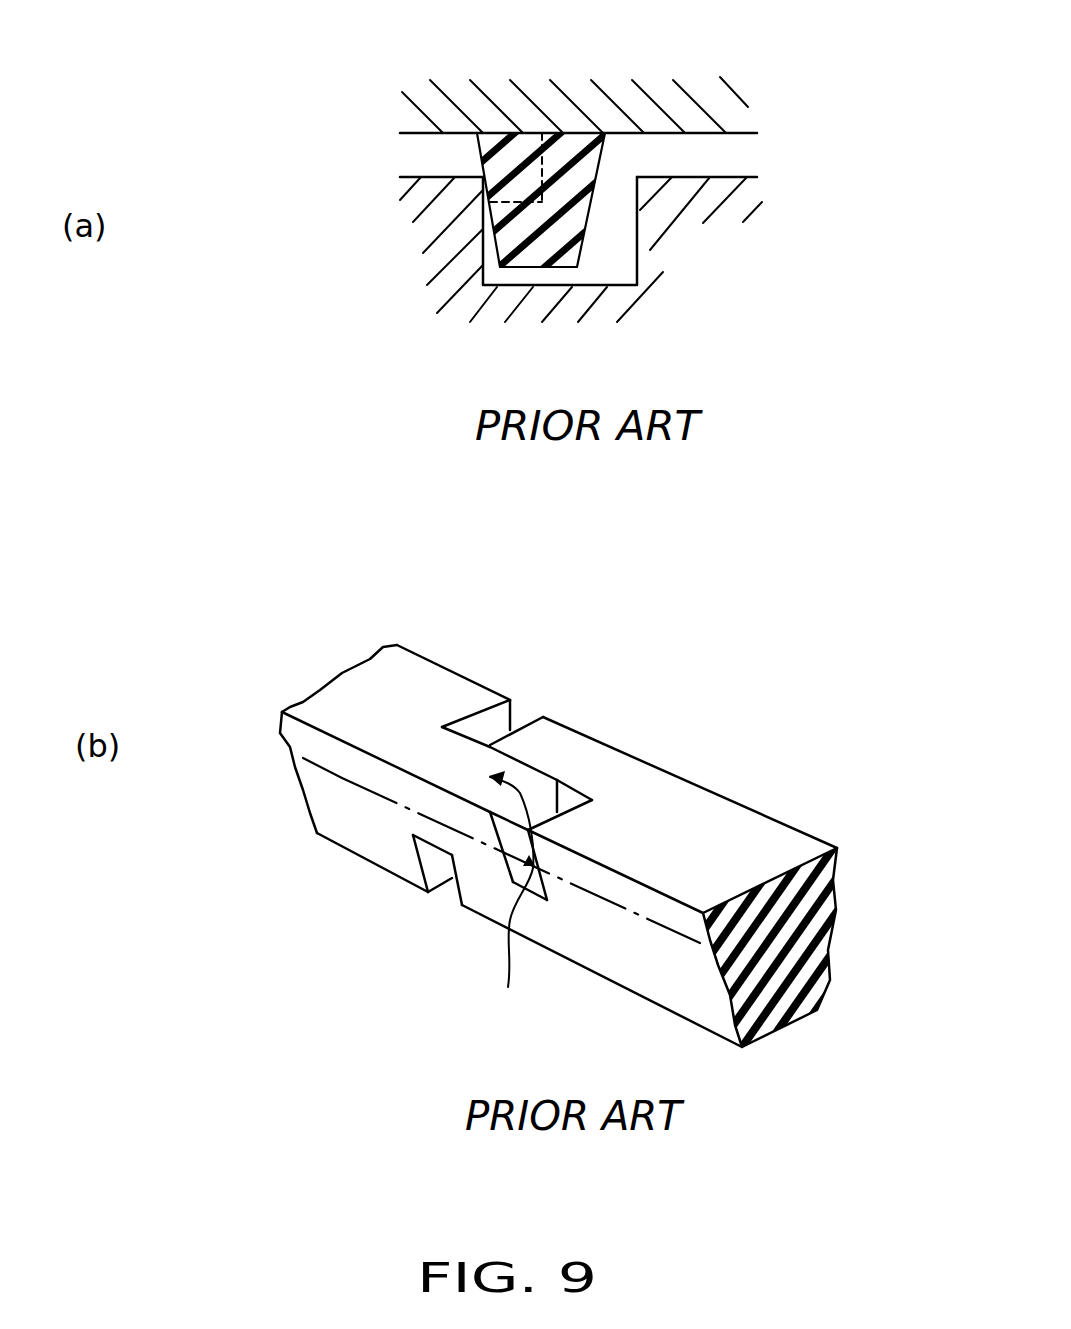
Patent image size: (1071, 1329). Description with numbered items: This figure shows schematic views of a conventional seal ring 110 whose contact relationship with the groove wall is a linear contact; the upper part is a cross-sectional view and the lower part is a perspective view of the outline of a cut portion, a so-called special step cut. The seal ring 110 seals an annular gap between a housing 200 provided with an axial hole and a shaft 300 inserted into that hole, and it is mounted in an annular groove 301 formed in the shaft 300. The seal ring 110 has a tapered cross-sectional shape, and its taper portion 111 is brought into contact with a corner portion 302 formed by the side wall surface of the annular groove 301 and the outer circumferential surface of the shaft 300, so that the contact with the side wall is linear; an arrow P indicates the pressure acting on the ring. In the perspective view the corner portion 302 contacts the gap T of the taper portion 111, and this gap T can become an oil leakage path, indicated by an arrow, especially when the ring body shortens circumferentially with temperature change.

The seal ring 110 is at (620, 165).
The taper portion 111 is at (595, 937).
The housing 200 is at (408, 138).
The shaft 300 is at (413, 175).
The annular groove 301 is at (596, 273).
The corner portion 302 is at (483, 177).
The oil pressure direction P is at (752, 155).
The gap T is at (547, 803).